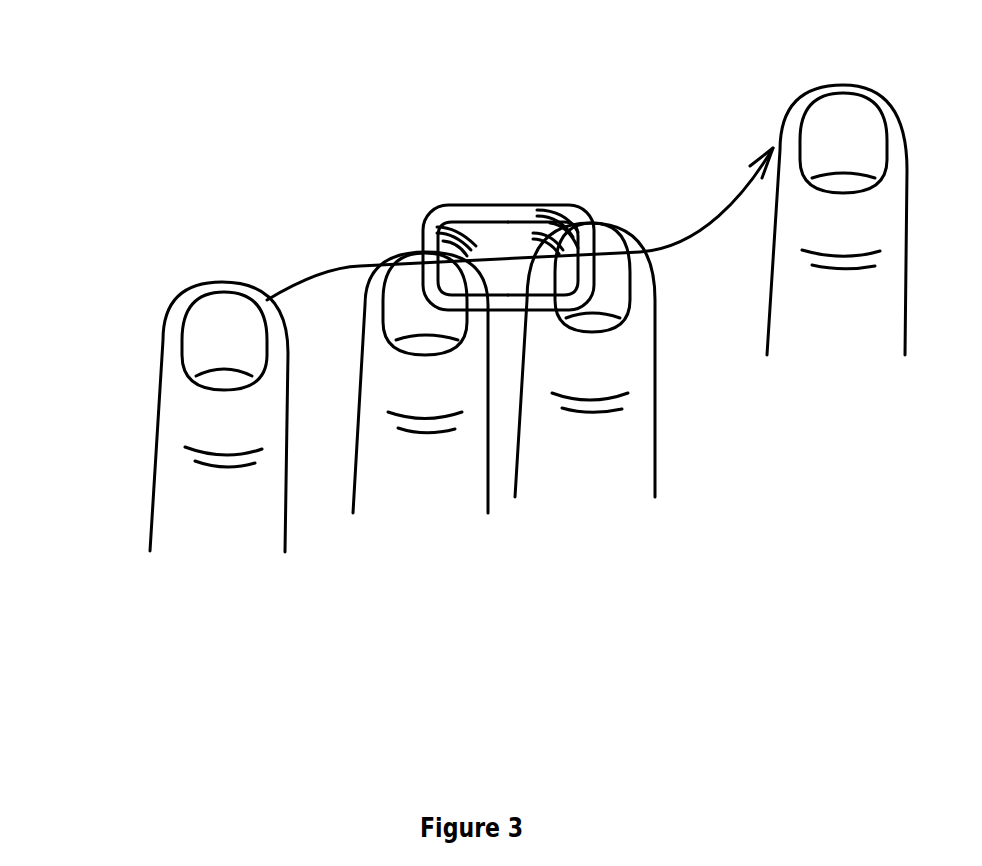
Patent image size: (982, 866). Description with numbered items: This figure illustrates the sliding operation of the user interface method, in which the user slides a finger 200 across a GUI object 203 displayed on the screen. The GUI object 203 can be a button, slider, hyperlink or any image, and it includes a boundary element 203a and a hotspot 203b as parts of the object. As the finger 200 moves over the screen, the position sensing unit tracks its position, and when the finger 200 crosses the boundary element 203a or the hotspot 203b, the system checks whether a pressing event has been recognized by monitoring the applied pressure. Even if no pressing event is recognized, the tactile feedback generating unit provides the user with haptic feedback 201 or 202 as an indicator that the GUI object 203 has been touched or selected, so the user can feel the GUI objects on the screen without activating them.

The finger 200 is at (166, 527).
The haptic feedback 201 is at (462, 212).
The haptic feedback 202 is at (588, 224).
The GUI object 203 is at (640, 86).
The boundary element 203a is at (491, 215).
The hotspot 203b is at (515, 237).